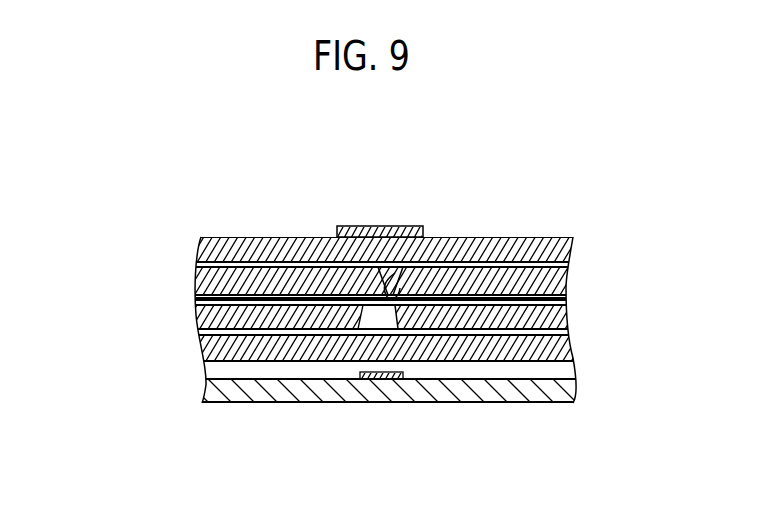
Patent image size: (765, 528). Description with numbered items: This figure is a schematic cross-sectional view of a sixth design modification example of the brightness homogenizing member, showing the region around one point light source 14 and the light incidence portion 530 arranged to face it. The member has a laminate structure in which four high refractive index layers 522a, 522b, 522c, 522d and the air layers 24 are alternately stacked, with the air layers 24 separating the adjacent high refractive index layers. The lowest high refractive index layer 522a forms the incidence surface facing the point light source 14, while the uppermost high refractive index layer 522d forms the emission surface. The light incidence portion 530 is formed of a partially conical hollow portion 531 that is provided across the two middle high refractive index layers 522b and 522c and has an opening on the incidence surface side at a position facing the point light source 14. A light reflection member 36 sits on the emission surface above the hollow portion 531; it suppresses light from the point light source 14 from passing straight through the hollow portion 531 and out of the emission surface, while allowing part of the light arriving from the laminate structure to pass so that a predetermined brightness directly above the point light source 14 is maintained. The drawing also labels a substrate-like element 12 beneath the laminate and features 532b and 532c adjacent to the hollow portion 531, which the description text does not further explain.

The high refractive index layer 522d is at (199, 250).
The high refractive index layer 522c is at (197, 282).
The high refractive index layer 522b is at (198, 317).
The high refractive index layer 522a is at (203, 349).
The substrate 12 is at (204, 389).
The light reflection member 36 is at (353, 226).
The light incidence portion 530 is at (386, 276).
The contact hole 532c is at (395, 273).
The contact hole 532b is at (392, 304).
The hollow portion 531 is at (365, 321).
The point light source 14 is at (410, 378).
The air layers 24 is at (572, 325).